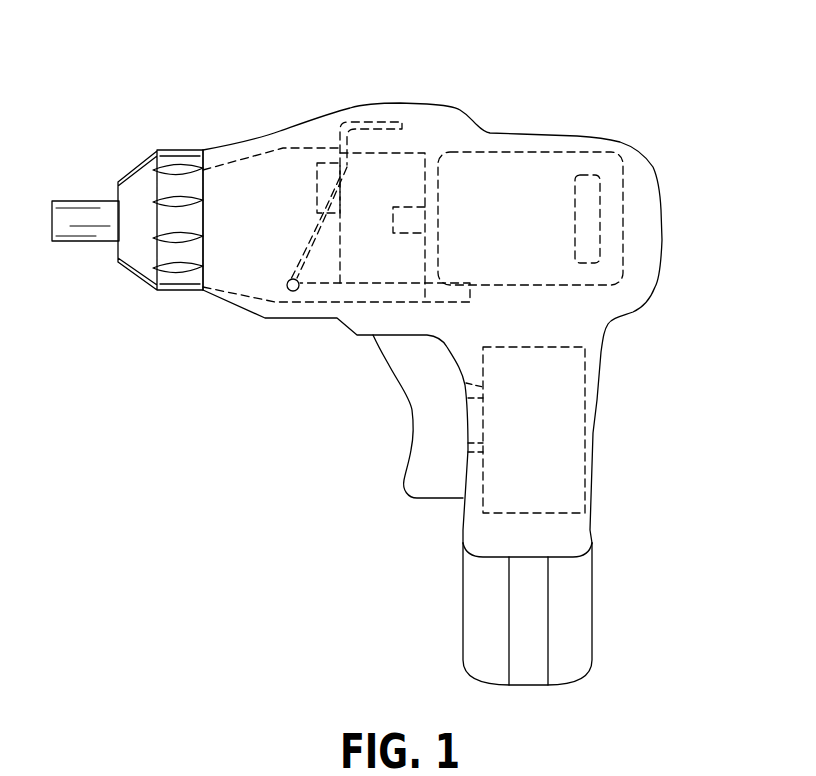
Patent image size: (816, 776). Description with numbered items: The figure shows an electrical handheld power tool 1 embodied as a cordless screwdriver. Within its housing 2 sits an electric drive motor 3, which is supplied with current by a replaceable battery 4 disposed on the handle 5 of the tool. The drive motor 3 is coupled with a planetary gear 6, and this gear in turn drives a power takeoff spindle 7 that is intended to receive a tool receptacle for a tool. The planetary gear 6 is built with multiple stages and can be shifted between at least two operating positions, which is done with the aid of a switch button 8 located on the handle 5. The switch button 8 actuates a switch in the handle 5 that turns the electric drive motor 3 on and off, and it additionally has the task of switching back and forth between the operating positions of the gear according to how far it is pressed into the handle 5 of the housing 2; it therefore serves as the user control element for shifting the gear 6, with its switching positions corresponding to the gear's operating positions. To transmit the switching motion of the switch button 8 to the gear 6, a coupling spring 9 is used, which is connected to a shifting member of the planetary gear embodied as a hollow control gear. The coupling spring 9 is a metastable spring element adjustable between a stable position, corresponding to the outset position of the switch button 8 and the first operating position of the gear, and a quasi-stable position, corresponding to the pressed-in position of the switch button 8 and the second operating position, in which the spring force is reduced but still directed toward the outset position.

The handheld power tool 1 is at (386, 347).
The housing 2 is at (577, 137).
The electric drive motor 3 is at (607, 193).
The battery pack 4 is at (577, 617).
The handle 5 is at (575, 422).
The planetary gear 6 is at (387, 163).
The power takeoff spindle 7 is at (113, 235).
The switch button 8 is at (428, 425).
The coupling spring 9 is at (333, 198).